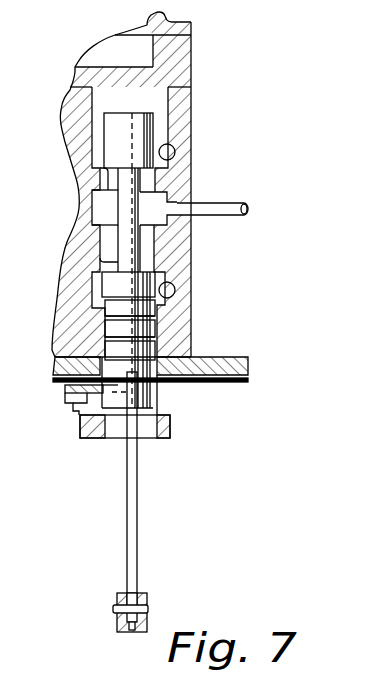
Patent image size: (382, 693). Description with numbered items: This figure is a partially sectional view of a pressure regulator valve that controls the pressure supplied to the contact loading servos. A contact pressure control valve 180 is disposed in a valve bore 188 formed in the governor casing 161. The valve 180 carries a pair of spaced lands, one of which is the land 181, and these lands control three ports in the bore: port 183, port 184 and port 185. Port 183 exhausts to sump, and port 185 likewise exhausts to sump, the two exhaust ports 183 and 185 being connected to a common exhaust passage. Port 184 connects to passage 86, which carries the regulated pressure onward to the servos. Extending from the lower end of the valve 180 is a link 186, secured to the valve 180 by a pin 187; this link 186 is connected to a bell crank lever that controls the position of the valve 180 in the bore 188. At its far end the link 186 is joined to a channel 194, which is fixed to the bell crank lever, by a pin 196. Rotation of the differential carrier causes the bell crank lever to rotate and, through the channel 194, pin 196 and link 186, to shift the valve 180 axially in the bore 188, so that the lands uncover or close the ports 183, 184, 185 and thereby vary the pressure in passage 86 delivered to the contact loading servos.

The governor casing 161 is at (177, 126).
The land 181 is at (112, 128).
The port 183 is at (158, 138).
The valve bore 188 is at (107, 173).
The contact pressure control valve 180 is at (118, 208).
The port 184 is at (167, 198).
The passage 86 is at (205, 212).
The port 185 is at (165, 302).
The pin 187 is at (108, 402).
The link 186 is at (132, 510).
The channel 194 is at (117, 599).
The pin 196 is at (131, 632).